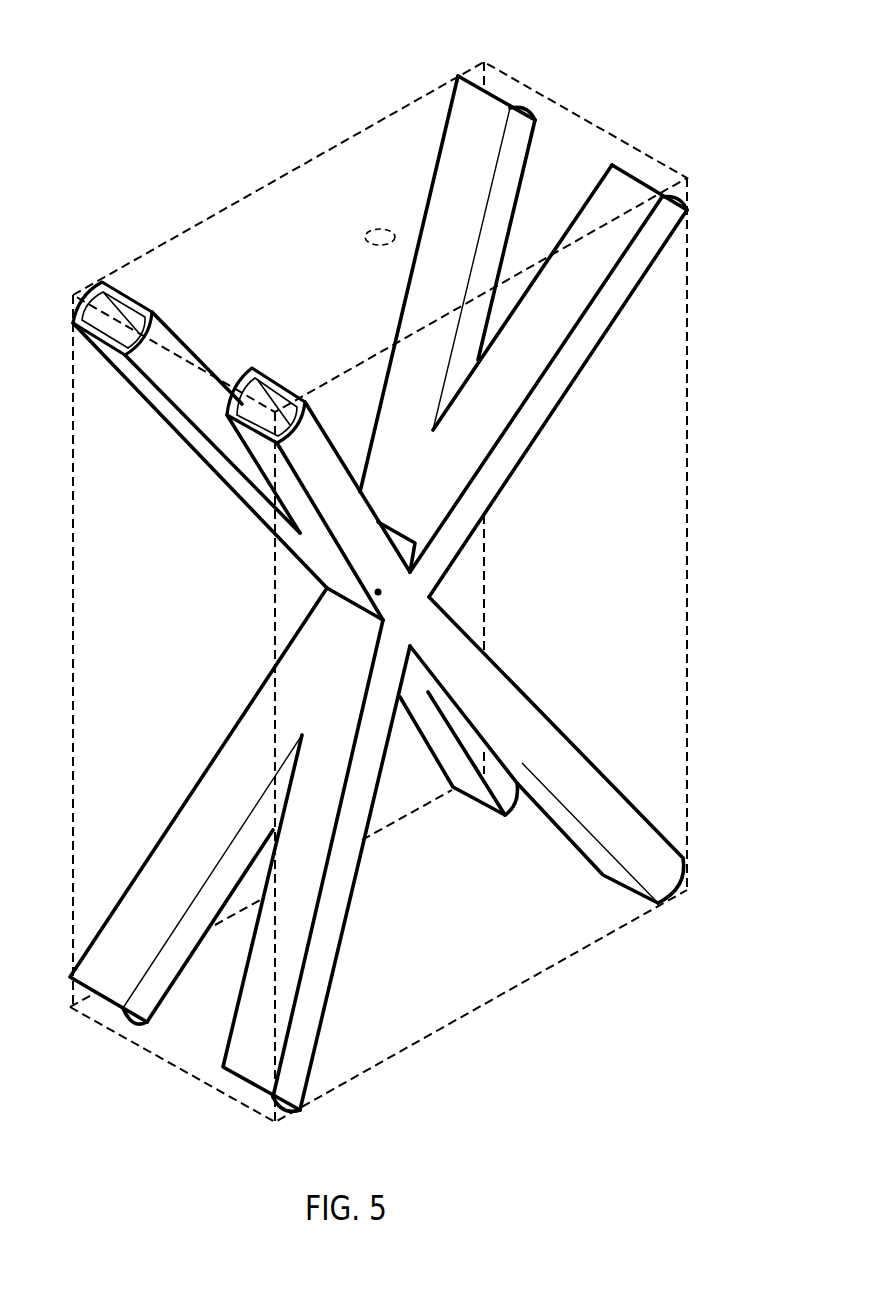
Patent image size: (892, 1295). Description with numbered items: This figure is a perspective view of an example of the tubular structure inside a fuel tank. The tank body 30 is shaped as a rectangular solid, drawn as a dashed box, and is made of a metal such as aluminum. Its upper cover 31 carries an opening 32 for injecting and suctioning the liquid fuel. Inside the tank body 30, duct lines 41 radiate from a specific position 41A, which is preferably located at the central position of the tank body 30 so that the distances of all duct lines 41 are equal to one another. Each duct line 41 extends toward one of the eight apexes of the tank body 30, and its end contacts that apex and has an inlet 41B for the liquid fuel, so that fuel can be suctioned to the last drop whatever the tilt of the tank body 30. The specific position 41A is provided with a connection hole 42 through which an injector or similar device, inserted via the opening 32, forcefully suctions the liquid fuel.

The tank body 30 is at (686, 457).
The upper cover 31 is at (277, 203).
The opening 32 is at (380, 229).
The duct line 41 is at (502, 725).
The specific position 41A is at (378, 592).
The inlet 41B is at (120, 300).
The connection hole 42 is at (393, 527).